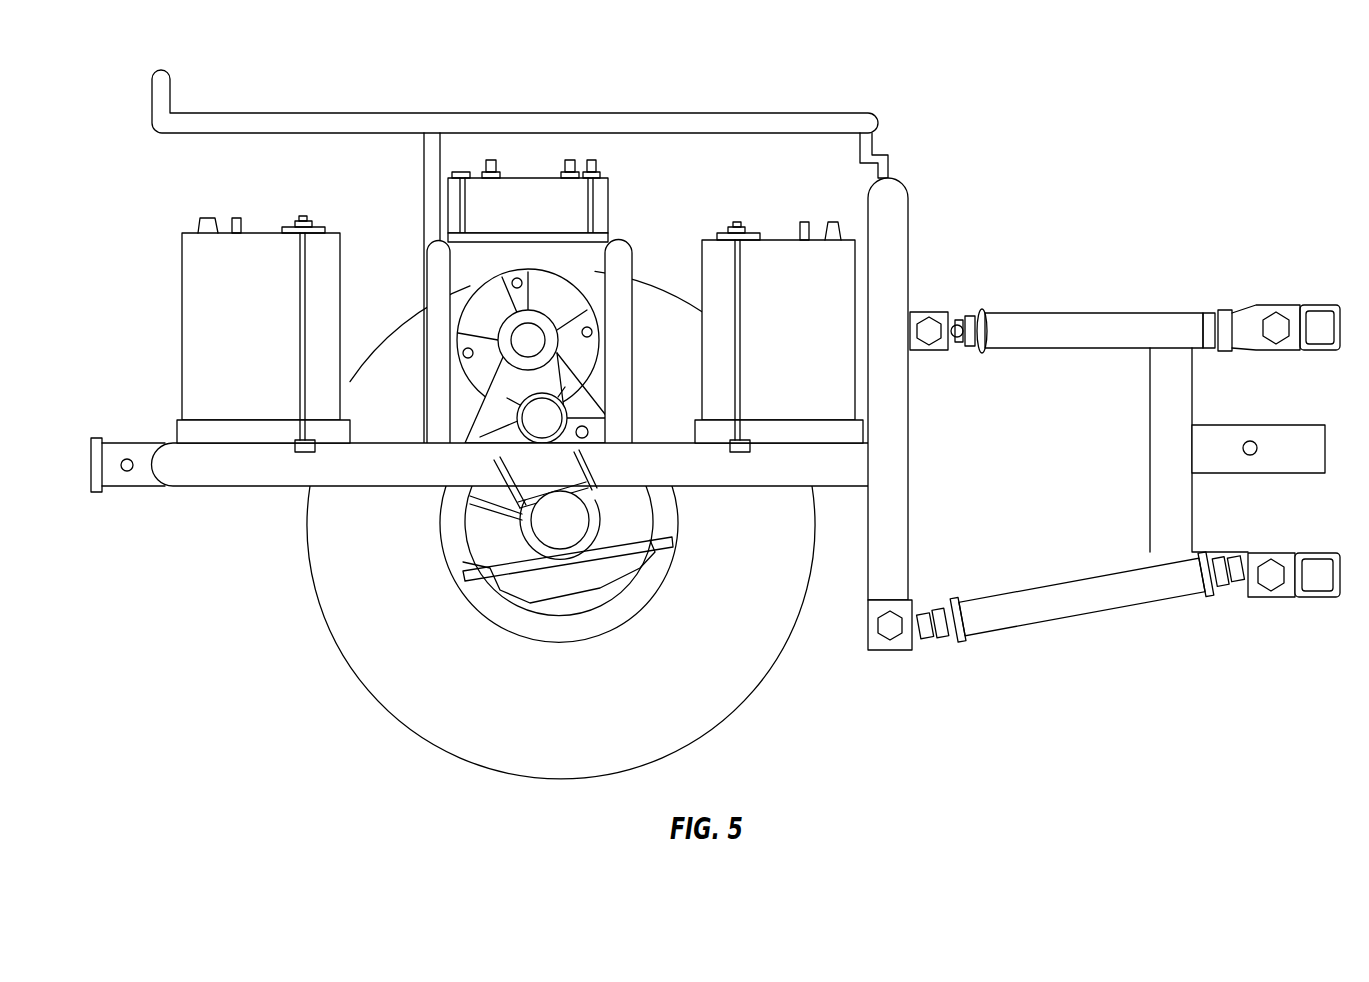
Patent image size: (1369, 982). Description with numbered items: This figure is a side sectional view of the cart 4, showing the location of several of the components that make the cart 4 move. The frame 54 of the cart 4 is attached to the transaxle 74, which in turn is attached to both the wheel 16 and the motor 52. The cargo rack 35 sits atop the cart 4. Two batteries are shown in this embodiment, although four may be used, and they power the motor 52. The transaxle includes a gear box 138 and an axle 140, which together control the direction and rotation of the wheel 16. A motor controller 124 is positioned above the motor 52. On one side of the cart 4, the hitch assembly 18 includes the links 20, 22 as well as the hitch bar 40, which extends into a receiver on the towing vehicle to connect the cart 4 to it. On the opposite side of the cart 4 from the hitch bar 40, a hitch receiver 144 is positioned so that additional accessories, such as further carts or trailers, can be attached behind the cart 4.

The cart 4 is at (130, 161).
The wheel 16 is at (712, 678).
The hitch assembly 18 is at (1045, 272).
The link 20 is at (1052, 590).
The link 22 is at (1097, 313).
The cargo rack 35 is at (394, 113).
The hitch bar 40 is at (1250, 425).
The motor 52 is at (483, 316).
The frame 54 is at (260, 487).
The transaxle 74 is at (593, 392).
The motor controller 124 is at (582, 205).
The gear box 138 is at (497, 528).
The axle 140 is at (560, 528).
The hitch receiver 144 is at (90, 465).